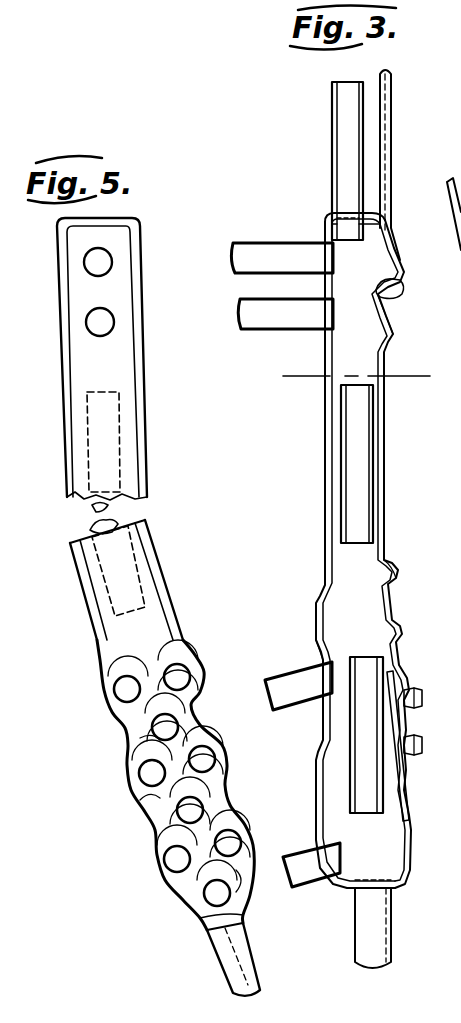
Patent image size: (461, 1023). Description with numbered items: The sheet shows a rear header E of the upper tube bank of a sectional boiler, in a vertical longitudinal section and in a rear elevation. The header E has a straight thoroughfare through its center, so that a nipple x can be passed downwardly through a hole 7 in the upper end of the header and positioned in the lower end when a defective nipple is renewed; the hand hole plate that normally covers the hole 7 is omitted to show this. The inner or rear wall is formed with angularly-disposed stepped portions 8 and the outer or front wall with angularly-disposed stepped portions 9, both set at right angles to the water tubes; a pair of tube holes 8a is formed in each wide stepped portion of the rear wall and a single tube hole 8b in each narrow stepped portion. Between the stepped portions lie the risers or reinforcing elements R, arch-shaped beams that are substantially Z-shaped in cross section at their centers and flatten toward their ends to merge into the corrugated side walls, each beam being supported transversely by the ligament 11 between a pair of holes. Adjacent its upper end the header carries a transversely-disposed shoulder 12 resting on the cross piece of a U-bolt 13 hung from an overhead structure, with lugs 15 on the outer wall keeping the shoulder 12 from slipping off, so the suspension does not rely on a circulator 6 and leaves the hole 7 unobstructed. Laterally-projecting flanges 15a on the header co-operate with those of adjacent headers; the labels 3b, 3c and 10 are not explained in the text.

In FIG. 3, the U-bolt 13 is at (384, 165).
In FIG. 3, the nipple x is at (347, 181).
In FIG. 5, the nipple x is at (92, 506).
In FIG. 3, the hole 7 is at (330, 214).
In FIG. 3, the lugs 15 is at (401, 289).
In FIG. 3, the shoulder 12 is at (397, 300).
In FIG. 3, the circulator 6 is at (350, 378).
In FIG. 3, the rear header E is at (391, 442).
In FIG. 5, the rear header E is at (140, 395).
In FIG. 3, the stepped portions of the outer wall 9 is at (402, 690).
In FIG. 3, the stepped portions of the inner wall 8 is at (322, 620).
In FIG. 3, the reinforcing element R is at (321, 640).
In FIG. 5, the reinforcing element R is at (158, 733).
In FIG. 5, the tongue 3b is at (122, 447).
In FIG. 5, the laterally-projecting flanges 15a is at (100, 608).
In FIG. 5, the lobed plate 10 is at (150, 660).
In FIG. 5, the ligament 11 is at (187, 654).
In FIG. 5, the tube holes 8a is at (127, 689).
In FIG. 5, the tube hole 8b is at (170, 727).
In FIG. 5, the web 3c is at (160, 802).